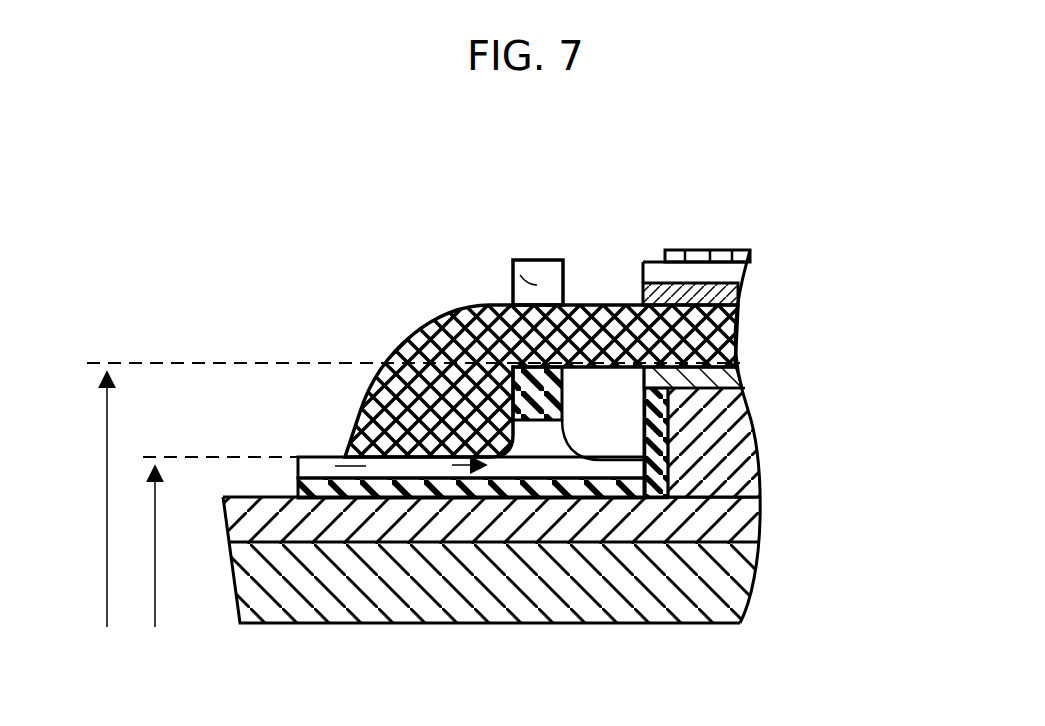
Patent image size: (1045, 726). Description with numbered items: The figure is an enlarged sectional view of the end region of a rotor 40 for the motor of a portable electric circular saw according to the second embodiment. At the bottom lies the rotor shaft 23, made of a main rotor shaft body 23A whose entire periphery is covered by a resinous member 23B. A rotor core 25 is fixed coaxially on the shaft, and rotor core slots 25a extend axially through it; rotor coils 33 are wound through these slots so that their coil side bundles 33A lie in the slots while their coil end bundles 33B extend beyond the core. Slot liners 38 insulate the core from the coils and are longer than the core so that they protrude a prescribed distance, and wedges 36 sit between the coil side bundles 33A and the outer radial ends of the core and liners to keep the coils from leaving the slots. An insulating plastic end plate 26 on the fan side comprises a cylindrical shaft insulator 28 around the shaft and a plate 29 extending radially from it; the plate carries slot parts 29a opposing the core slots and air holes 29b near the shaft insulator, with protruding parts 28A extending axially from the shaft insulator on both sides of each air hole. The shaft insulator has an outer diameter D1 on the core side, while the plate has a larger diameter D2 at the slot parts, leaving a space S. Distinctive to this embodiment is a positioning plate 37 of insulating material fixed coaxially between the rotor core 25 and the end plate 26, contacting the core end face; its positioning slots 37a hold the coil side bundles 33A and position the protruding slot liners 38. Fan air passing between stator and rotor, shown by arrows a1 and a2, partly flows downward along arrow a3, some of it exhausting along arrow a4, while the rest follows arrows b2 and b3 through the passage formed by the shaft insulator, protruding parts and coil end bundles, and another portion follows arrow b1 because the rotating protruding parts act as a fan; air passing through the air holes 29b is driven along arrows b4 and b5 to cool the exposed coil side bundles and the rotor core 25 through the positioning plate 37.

The rotor 40 is at (263, 236).
The rotor shaft 23 is at (540, 597).
The main rotor shaft body 23A is at (718, 583).
The resinous member 23B is at (715, 515).
The rotor core 25 is at (753, 441).
The rotor core slot 25a is at (720, 389).
The end plate 26 is at (300, 473).
The shaft insulator 28 is at (405, 486).
The protruding part 28A is at (480, 435).
The plate 29 is at (535, 262).
The slot part 29a is at (520, 278).
The air hole 29b is at (430, 430).
The rotor coil 33 is at (735, 294).
The coil side bundle 33A is at (733, 323).
The coil end bundle 33B is at (437, 372).
The wedge 36 is at (700, 278).
The positioning plate 37 is at (655, 440).
The positioning slot 37a is at (740, 255).
The slot liner 38 is at (720, 371).
The space S is at (627, 413).
The outer diameter D1 is at (348, 542).
The diameter D2 is at (408, 495).
The arrow a1 is at (722, 207).
The arrow a2 is at (540, 208).
The arrow a3 is at (366, 282).
The arrow a4 is at (263, 437).
The arrow b1 is at (413, 303).
The arrow b2 is at (318, 452).
The arrow b3 is at (463, 490).
The arrow b4 is at (603, 385).
The arrow b5 is at (607, 280).